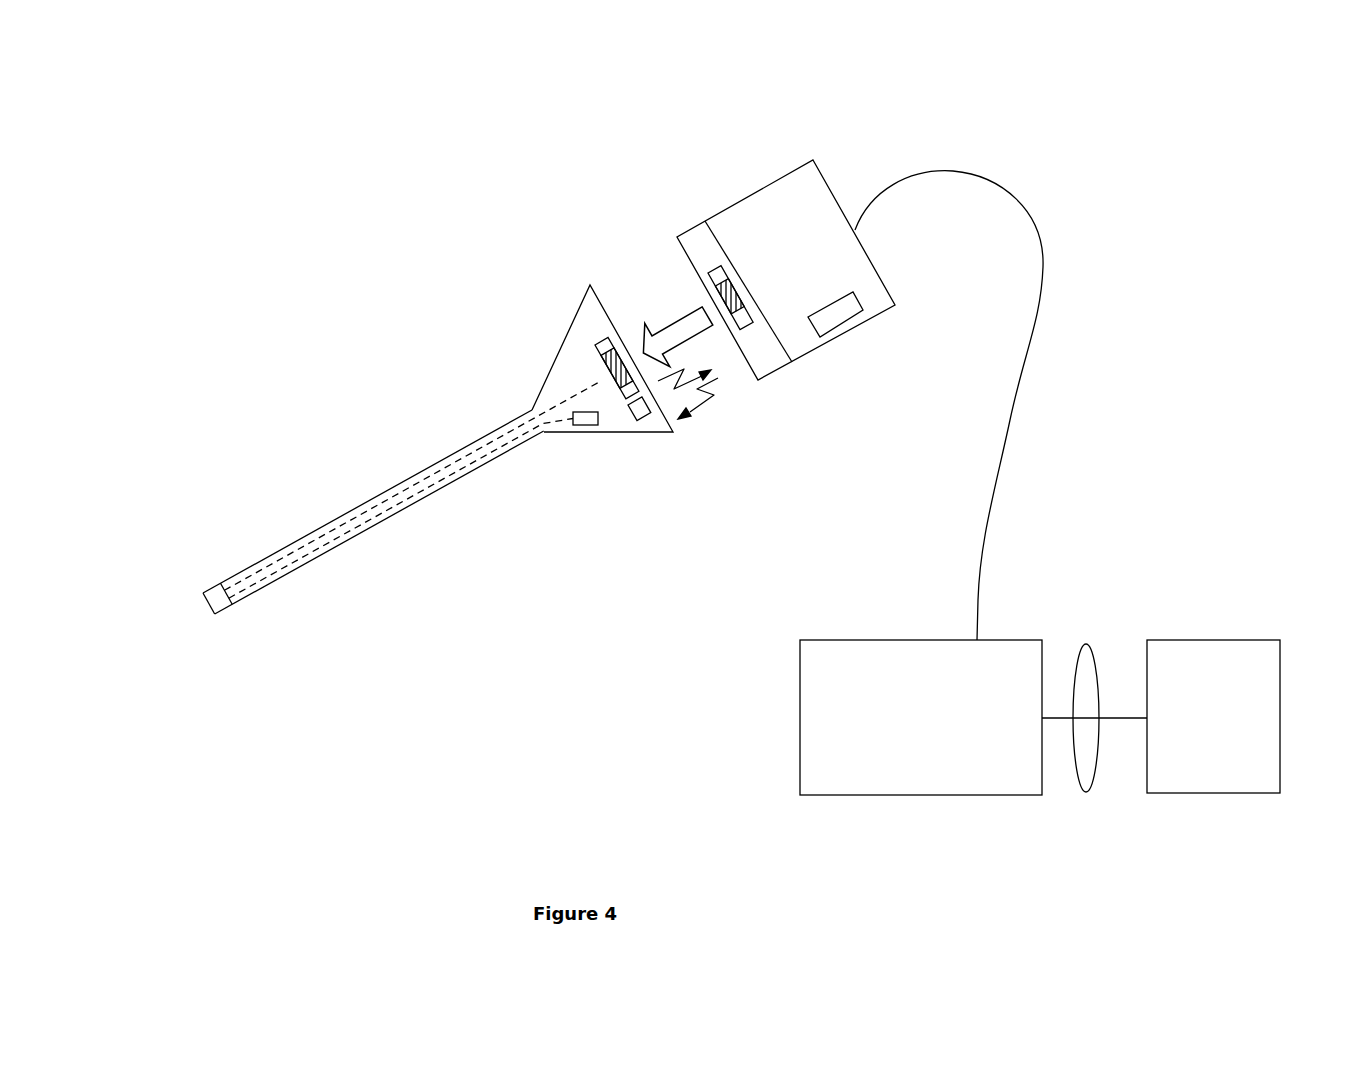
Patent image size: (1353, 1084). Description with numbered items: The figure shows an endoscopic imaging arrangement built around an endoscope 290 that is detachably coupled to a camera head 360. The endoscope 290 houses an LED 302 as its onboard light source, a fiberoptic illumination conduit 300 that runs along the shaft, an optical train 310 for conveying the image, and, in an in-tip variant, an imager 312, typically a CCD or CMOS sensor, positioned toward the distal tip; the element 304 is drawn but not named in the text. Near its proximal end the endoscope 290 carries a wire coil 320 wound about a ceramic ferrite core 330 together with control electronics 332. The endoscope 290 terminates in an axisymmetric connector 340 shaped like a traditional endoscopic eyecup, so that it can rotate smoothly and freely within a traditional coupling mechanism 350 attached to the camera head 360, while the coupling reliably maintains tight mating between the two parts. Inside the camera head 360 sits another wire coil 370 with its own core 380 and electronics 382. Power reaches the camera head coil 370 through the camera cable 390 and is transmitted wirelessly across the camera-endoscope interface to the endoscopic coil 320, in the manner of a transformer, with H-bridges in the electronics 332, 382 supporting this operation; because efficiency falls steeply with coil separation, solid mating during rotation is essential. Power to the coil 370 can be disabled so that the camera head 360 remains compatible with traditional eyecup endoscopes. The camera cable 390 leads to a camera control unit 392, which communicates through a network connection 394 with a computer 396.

The endoscope 290 is at (539, 574).
The fiberoptic illumination conduit 300 is at (442, 480).
The LED 302 is at (592, 426).
The lower channel 304 is at (337, 553).
The optical train 310 is at (361, 510).
The imager 312 is at (213, 592).
The wire coil 320 is at (599, 345).
The ceramic ferrite core 330 is at (607, 370).
The control electronics 332 is at (667, 433).
The axisymmetric connector 340 is at (606, 308).
The coupling mechanism 350 is at (773, 371).
The camera head 360 is at (715, 157).
The wire coil 370 is at (721, 266).
The core 380 is at (718, 297).
The electronics 382 is at (838, 332).
The camera cable 390 is at (1047, 279).
The camera control unit 392 is at (800, 705).
The network connection 394 is at (1087, 793).
The computer 396 is at (1215, 795).